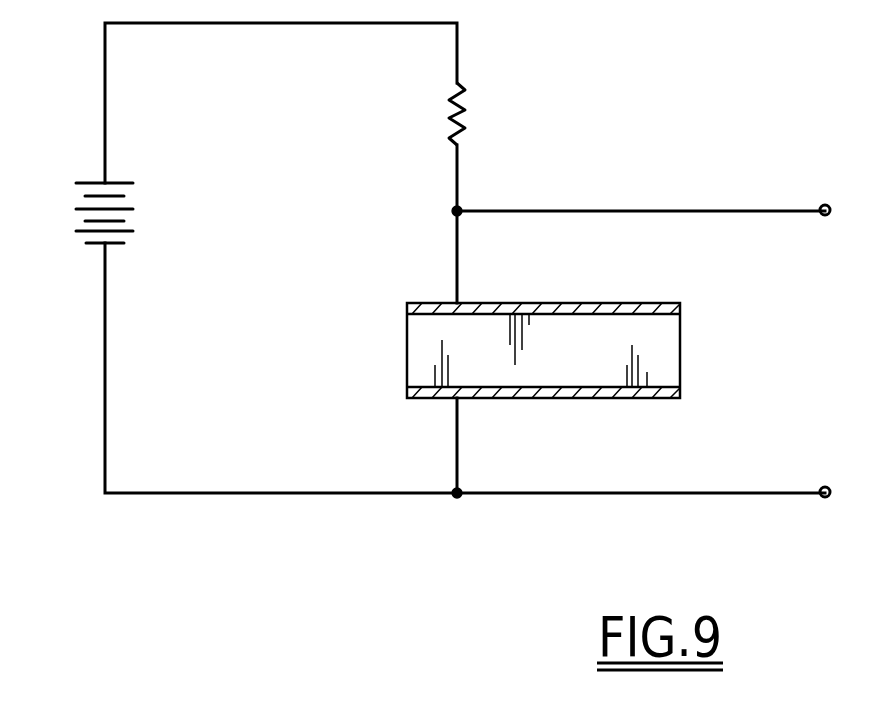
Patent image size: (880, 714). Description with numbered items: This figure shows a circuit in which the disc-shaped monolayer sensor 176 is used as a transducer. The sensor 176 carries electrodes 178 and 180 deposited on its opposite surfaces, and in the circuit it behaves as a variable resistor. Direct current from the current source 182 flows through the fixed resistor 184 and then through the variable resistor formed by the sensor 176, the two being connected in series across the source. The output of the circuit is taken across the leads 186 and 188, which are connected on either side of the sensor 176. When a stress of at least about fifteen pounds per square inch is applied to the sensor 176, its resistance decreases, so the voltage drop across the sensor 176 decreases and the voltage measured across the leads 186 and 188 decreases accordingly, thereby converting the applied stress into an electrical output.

The sensor 176 is at (416, 345).
The electrode 178 is at (575, 303).
The electrode 180 is at (580, 398).
The current source 182 is at (84, 183).
The fixed resistor 184 is at (463, 123).
The lead 186 is at (822, 204).
The lead 188 is at (822, 486).